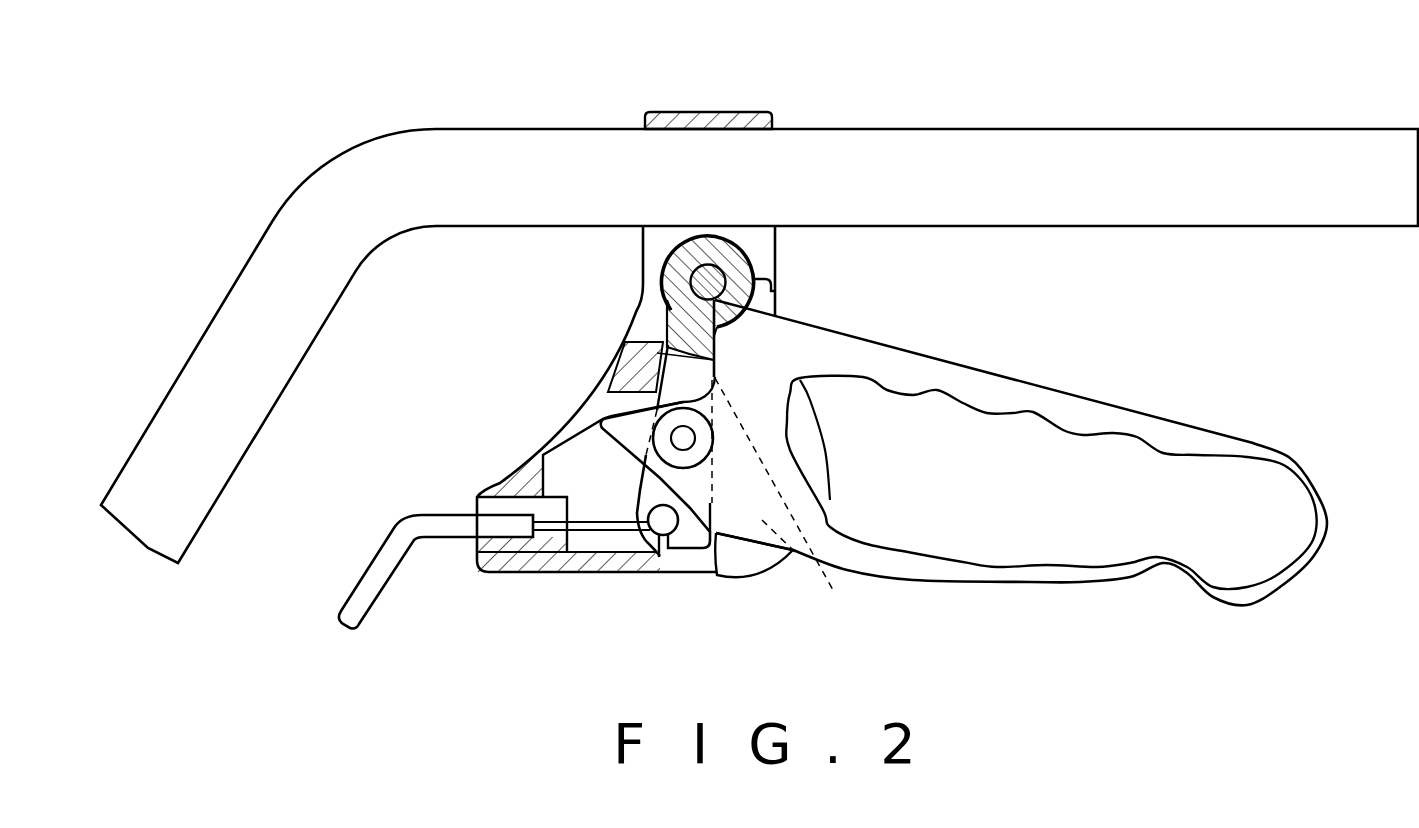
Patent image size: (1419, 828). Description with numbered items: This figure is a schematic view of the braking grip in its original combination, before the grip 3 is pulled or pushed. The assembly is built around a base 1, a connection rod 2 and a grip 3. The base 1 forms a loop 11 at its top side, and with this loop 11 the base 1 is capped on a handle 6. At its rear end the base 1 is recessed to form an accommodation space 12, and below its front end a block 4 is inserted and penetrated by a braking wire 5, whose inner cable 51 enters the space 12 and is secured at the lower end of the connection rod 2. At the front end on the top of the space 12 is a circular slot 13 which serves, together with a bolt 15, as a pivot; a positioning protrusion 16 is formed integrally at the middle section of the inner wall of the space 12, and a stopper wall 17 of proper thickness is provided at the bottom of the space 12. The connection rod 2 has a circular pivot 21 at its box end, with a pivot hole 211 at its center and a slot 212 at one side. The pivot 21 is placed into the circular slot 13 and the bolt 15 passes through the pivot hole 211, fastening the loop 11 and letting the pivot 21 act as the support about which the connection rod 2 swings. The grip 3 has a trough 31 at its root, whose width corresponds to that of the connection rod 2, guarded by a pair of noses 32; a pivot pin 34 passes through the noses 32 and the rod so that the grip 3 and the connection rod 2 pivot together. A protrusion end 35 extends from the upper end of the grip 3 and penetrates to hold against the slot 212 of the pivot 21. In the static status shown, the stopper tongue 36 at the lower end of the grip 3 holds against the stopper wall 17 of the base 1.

The base 1 is at (648, 313).
The connection rod 2 is at (680, 373).
The grip 3 is at (986, 389).
The block 4 is at (517, 545).
The braking wire 5 is at (441, 524).
The handle 6 is at (1027, 151).
The loop 11 is at (720, 118).
The accommodation space 12 is at (757, 558).
The circular slot 13 is at (747, 253).
The bolt 15 is at (726, 279).
The positioning protrusion 16 is at (640, 388).
The stopper wall 17 is at (647, 554).
The circular pivot 21 is at (683, 262).
The pivot hole 211 is at (693, 282).
The slot 212 is at (733, 292).
The trough 31 is at (747, 502).
The noses 32 is at (618, 422).
The pivot pin 34 is at (685, 440).
The protrusion end 35 is at (722, 323).
The stopper tongue 36 is at (678, 558).
The inner cable 51 is at (596, 524).